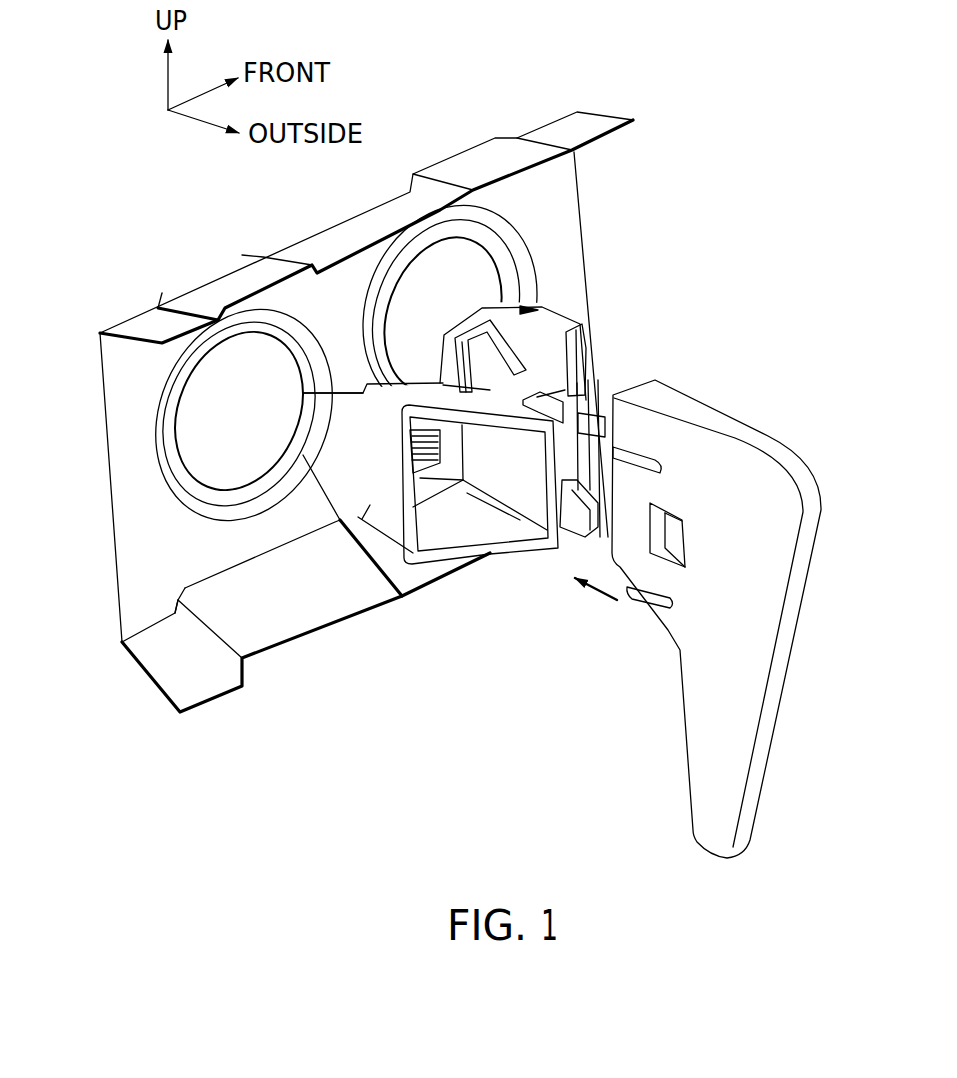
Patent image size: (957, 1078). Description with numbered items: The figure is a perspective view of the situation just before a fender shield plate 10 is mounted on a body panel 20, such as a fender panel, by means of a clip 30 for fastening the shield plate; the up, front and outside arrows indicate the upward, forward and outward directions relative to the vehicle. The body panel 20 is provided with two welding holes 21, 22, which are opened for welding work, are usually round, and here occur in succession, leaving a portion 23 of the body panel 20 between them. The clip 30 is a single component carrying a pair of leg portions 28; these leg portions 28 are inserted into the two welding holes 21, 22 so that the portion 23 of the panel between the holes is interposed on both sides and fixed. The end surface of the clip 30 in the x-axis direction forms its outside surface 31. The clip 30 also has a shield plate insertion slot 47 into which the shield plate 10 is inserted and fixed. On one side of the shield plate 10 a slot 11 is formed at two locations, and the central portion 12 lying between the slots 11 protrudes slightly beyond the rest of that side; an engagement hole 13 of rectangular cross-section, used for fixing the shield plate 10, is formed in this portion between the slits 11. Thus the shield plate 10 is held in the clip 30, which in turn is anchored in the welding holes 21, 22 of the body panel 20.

The fender shield plate 10 is at (737, 413).
The slot 11 is at (645, 588).
The central portion 12 is at (610, 547).
The engagement hole 13 is at (680, 538).
The body panel 20 is at (448, 150).
The welding hole 21 is at (193, 488).
The welding hole 22 is at (513, 267).
The portion of the body panel between the two welding holes 23 is at (348, 367).
The leg portion 28 is at (324, 453).
The clip for fastening a fender shield plate 30 is at (507, 560).
The outside surface 31 is at (386, 492).
The shield plate insertion slot 47 is at (562, 390).